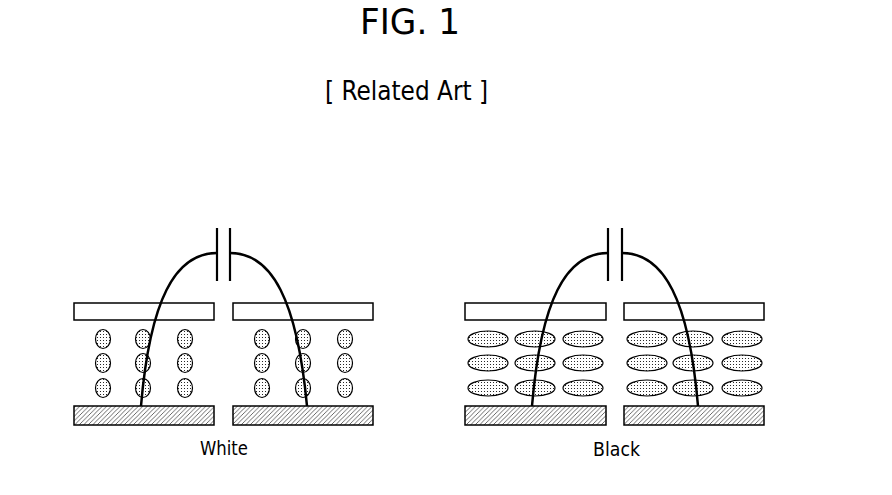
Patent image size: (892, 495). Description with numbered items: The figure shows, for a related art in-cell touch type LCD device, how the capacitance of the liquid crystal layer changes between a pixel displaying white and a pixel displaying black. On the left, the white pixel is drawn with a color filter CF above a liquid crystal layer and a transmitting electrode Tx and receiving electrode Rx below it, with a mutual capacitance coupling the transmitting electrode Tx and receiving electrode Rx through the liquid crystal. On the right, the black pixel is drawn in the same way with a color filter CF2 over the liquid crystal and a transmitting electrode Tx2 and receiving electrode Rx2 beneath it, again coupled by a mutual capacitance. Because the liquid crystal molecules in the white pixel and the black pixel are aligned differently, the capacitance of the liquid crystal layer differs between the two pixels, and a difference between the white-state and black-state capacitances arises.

The color filter CF is at (205, 311).
The transmitting electrode Tx is at (129, 414).
The receiving electrode Rx is at (318, 414).
The color filter CF2 is at (596, 311).
The transmitting electrode Tx2 is at (521, 414).
The receiving electrode Rx2 is at (709, 414).